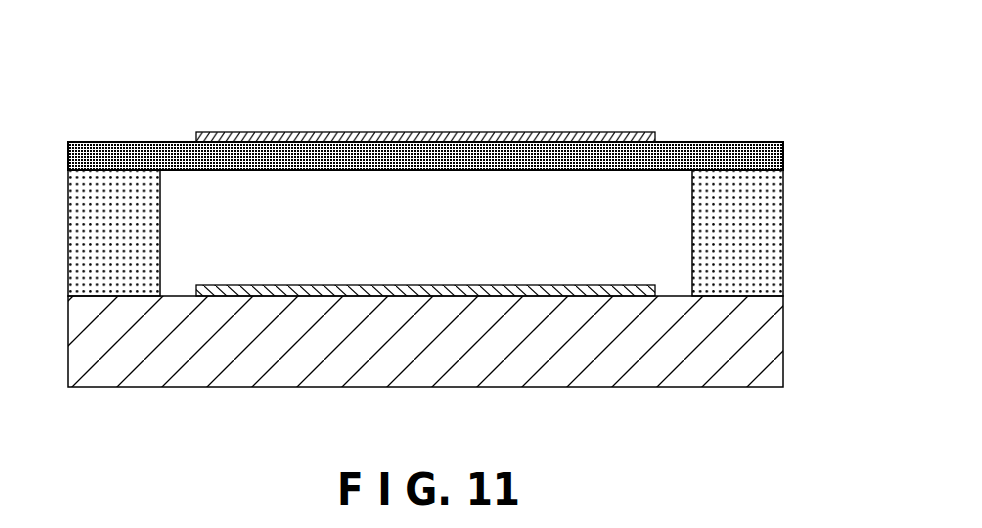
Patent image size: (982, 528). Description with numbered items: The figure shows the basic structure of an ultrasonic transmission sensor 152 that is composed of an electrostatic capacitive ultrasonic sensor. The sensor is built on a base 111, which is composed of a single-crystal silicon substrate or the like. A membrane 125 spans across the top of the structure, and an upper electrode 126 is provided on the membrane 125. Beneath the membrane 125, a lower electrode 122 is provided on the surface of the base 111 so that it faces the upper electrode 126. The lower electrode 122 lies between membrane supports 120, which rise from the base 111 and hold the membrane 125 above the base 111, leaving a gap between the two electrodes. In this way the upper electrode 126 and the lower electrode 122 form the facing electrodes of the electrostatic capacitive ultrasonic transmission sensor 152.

The base 111 is at (770, 338).
The membrane support 120 is at (773, 242).
The lower electrode 122 is at (492, 284).
The membrane 125 is at (162, 133).
The upper electrode 126 is at (500, 137).
The ultrasonic transmission sensor 152 is at (779, 99).